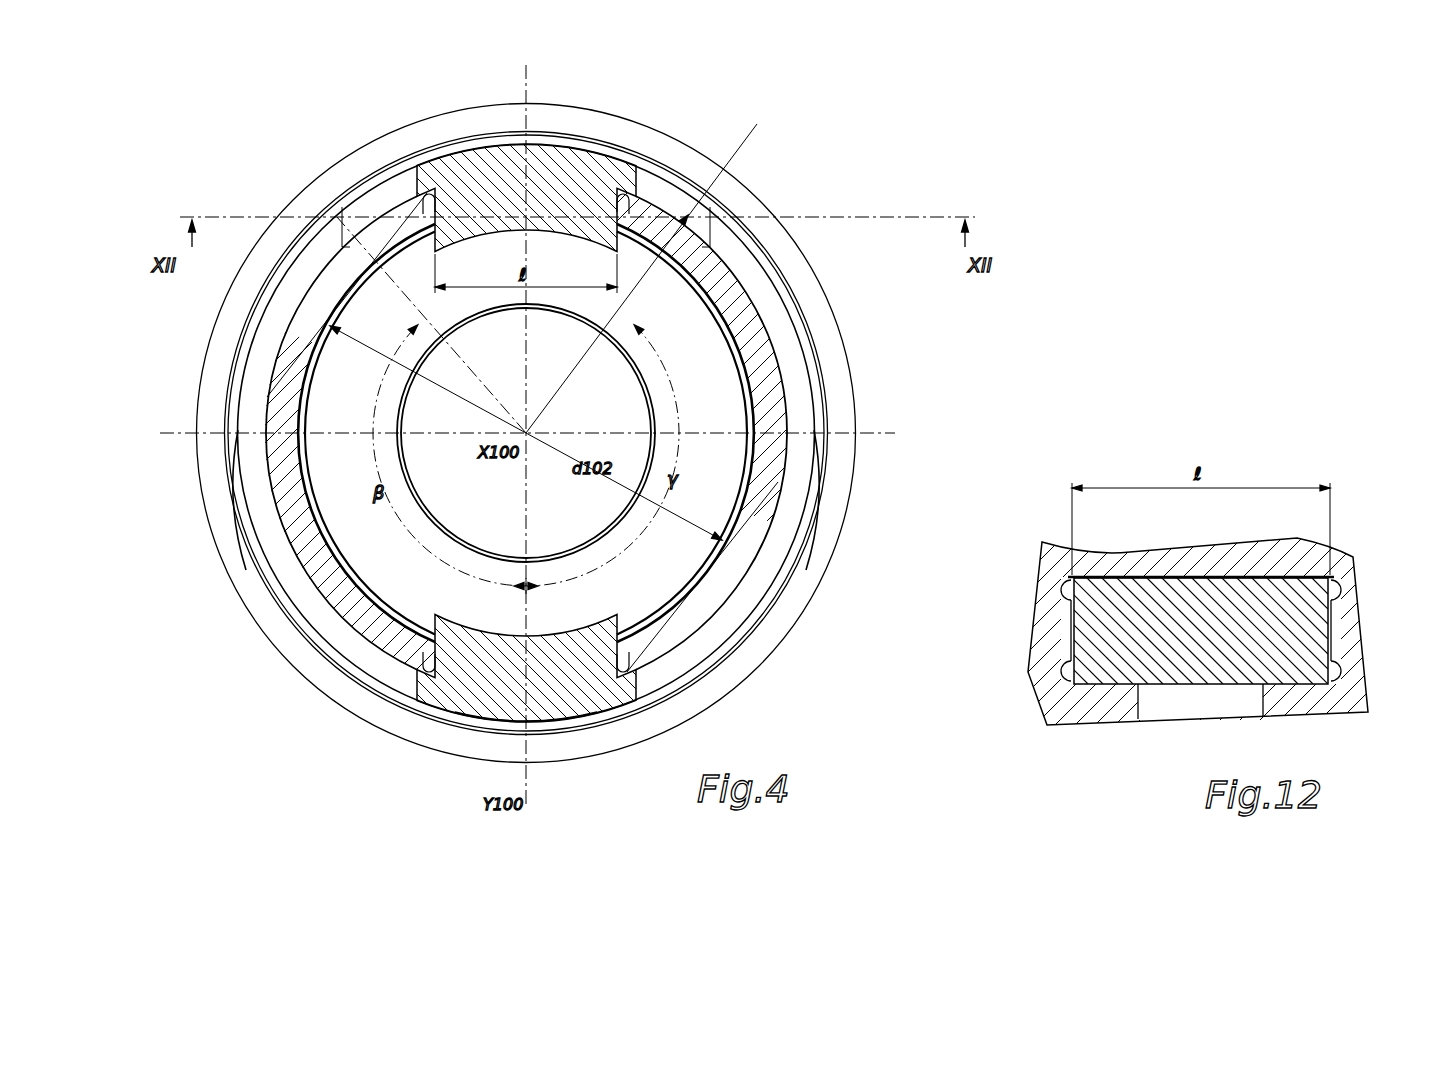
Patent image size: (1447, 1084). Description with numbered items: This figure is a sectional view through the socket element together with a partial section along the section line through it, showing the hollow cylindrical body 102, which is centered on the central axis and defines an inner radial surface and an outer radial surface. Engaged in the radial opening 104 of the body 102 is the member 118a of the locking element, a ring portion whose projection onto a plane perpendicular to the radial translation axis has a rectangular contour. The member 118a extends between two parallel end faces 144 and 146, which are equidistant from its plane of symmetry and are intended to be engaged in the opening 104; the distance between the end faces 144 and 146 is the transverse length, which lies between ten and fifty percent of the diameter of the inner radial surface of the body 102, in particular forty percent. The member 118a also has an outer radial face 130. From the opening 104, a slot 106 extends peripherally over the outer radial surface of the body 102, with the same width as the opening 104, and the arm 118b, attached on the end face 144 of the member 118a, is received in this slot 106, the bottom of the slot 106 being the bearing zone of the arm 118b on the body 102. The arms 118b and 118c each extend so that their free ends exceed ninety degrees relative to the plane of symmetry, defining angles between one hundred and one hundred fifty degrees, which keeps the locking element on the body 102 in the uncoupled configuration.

In FIG. 4, the hollow cylindrical body 102 is at (778, 480).
In FIG. 12, the hollow cylindrical body 102 is at (1337, 700).
In FIG. 4, the opening 104 is at (490, 178).
In FIG. 12, the opening 104 is at (1113, 640).
In FIG. 4, the slot 106 is at (282, 293).
In FIG. 4, the member 118a is at (567, 690).
In FIG. 12, the member 118a is at (1193, 660).
In FIG. 4, the arm 118b is at (280, 565).
In FIG. 4, the arm 118c is at (775, 553).
In FIG. 4, the outer radial face 130 is at (563, 141).
In FIG. 4, the end face 144 is at (429, 197).
In FIG. 12, the end face 144 is at (1061, 625).
In FIG. 4, the end face 146 is at (630, 198).
In FIG. 12, the end face 146 is at (1338, 622).